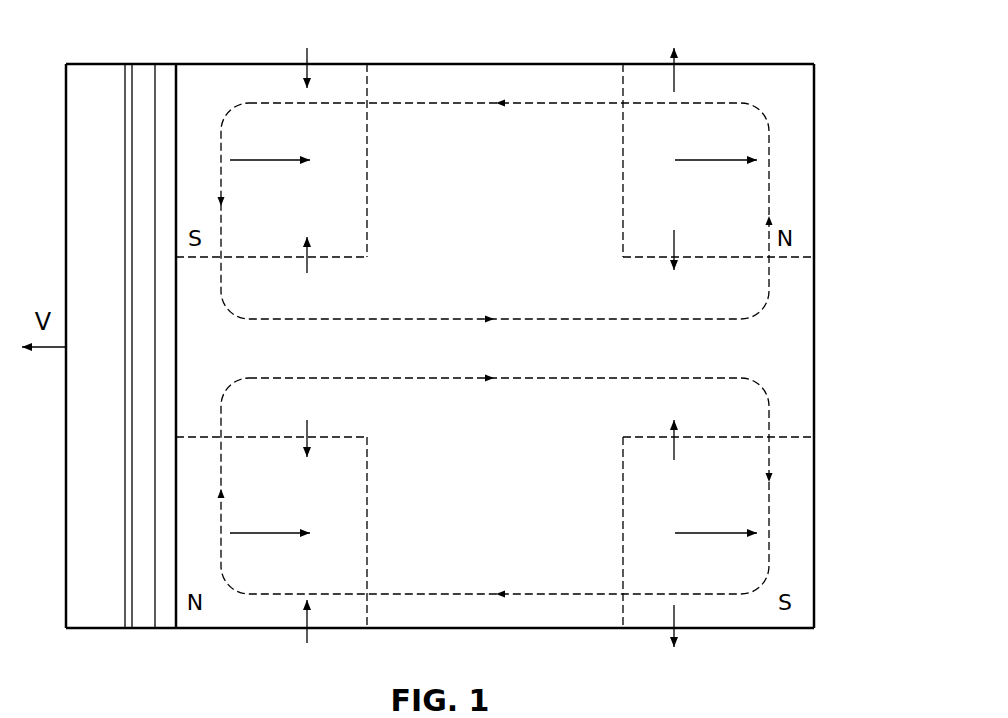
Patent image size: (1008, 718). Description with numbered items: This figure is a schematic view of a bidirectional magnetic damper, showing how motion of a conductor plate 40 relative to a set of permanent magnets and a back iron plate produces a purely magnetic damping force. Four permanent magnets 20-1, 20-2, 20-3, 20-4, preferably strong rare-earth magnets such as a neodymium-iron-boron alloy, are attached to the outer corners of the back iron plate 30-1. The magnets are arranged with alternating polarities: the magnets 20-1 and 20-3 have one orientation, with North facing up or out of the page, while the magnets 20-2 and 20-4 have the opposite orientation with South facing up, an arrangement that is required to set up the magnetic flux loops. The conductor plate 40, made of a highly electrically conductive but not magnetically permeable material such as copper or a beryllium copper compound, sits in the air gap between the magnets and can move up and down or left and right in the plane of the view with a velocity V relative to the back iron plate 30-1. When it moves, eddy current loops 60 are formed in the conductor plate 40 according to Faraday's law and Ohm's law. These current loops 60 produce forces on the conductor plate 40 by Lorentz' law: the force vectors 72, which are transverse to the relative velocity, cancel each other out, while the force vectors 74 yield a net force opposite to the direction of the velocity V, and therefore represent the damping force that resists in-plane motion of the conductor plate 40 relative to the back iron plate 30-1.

The permanent magnet 20-1 is at (222, 608).
The permanent magnet 20-2 is at (800, 565).
The permanent magnet 20-3 is at (790, 83).
The permanent magnet 20-4 is at (230, 75).
The back iron plate 30-1 is at (800, 298).
The conductor plate 40 is at (110, 75).
The eddy current loops 60 is at (542, 327).
The force vectors 72 is at (310, 56).
The force vectors 74 is at (267, 160).